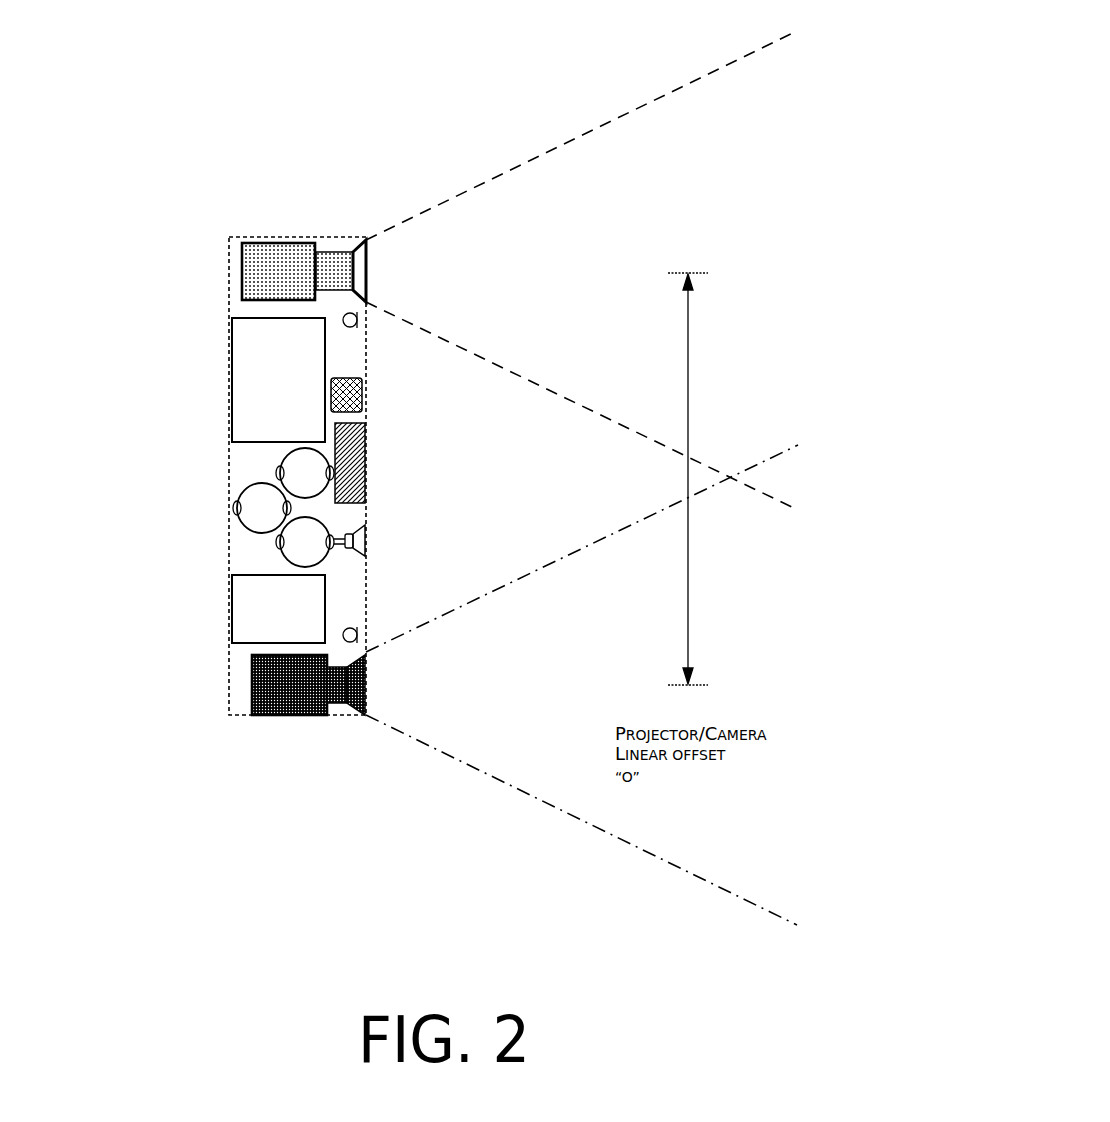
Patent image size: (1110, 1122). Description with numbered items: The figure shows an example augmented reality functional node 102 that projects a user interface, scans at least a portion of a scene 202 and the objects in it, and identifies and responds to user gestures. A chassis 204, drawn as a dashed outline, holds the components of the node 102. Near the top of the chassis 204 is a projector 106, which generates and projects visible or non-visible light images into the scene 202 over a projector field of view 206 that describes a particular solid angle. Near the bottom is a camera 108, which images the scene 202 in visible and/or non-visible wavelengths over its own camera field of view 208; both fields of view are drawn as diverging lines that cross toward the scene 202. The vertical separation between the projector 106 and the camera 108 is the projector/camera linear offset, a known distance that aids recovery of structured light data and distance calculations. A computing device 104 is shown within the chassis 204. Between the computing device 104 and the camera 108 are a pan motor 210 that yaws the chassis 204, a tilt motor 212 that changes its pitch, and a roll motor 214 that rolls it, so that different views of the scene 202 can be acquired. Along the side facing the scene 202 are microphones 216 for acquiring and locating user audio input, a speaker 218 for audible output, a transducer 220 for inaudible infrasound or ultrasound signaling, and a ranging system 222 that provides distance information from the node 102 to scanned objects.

The augmented reality functional node 102 is at (262, 238).
The computing device 104 is at (278, 382).
The projector 106 is at (278, 268).
The camera 108 is at (252, 712).
The scene 202 is at (831, 477).
The chassis 204 is at (297, 238).
The projector field of view 206 is at (585, 130).
The camera field of view 208 is at (531, 805).
The pan motor 210 is at (278, 472).
The tilt motor 212 is at (238, 517).
The roll motor 214 is at (282, 543).
The microphone 216 is at (358, 315).
The speaker 218 is at (367, 540).
The transducer 220 is at (363, 382).
The ranging system 222 is at (365, 455).